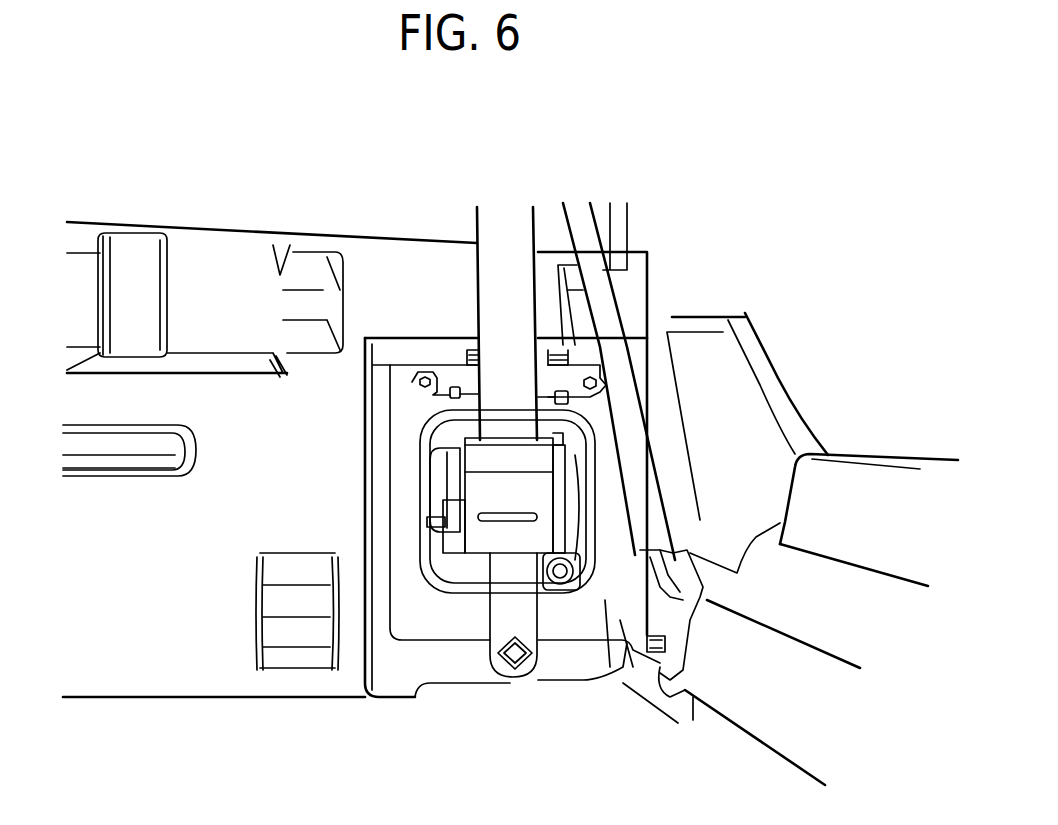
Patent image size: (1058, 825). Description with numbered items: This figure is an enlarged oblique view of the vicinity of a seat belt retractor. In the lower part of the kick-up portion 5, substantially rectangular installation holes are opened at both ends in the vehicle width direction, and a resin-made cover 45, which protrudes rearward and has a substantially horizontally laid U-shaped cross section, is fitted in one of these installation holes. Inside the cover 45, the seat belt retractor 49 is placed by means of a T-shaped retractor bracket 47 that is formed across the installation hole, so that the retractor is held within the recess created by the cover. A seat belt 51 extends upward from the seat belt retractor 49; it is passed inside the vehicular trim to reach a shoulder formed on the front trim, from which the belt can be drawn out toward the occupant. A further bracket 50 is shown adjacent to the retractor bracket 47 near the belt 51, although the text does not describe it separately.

The center pillar trim / body panel 5 is at (206, 407).
The retractor mounting bracket 45 is at (410, 553).
The clip 47 is at (460, 385).
The seat belt retractor 49 is at (440, 488).
The bracket 50 is at (591, 375).
The seat belt webbing 51 is at (578, 222).